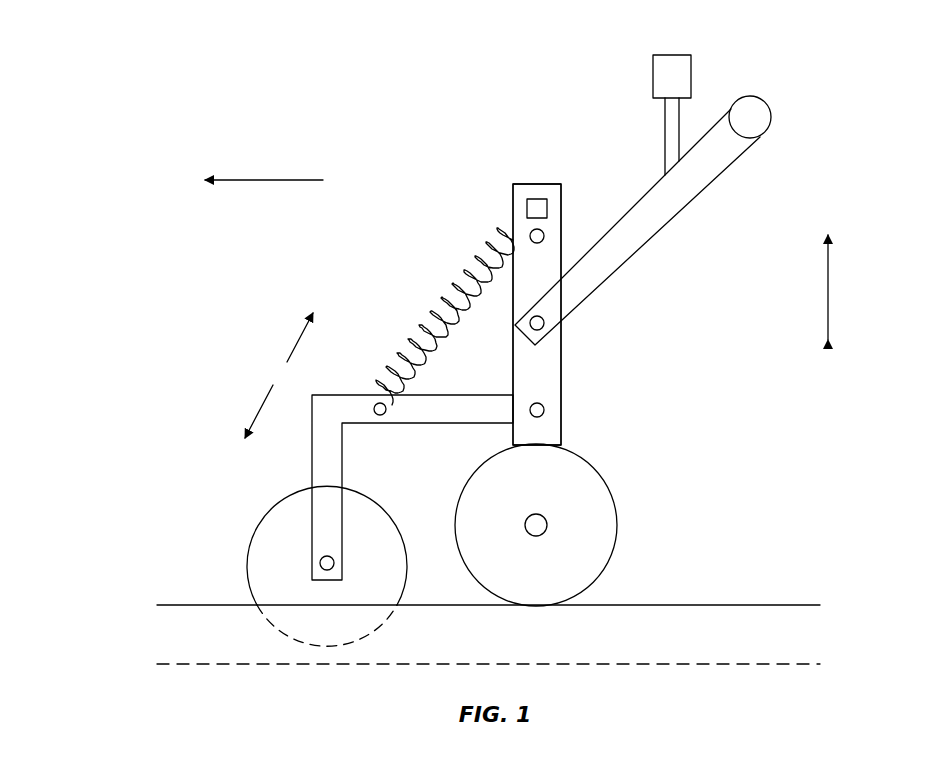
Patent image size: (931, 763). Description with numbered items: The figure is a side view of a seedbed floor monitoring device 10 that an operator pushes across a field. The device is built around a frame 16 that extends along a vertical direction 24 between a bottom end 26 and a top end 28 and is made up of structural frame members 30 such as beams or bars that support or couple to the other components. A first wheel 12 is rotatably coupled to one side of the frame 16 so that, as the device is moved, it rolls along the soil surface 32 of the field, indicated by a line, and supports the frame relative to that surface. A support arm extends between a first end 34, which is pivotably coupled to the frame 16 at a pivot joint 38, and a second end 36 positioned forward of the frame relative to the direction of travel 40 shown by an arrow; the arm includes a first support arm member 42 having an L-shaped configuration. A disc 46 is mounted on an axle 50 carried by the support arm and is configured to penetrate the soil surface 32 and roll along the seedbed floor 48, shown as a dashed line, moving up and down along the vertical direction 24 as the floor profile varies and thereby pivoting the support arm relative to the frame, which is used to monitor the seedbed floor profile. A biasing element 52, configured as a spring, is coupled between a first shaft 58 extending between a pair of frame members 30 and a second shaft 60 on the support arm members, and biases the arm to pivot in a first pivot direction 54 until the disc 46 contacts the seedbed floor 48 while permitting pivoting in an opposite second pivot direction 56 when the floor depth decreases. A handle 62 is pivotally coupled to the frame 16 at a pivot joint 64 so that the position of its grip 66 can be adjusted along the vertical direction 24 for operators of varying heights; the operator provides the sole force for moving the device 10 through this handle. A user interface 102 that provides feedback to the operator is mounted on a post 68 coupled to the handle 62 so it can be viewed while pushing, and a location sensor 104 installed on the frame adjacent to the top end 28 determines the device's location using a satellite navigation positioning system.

The seedbed floor monitoring device 10 is at (130, 160).
The first wheel 12 is at (618, 532).
The frame 16 is at (565, 365).
The vertical direction 24 is at (829, 298).
The bottom end 26 is at (597, 447).
The top end 28 is at (555, 153).
The structural frame members 30 is at (537, 183).
The soil surface 32 is at (765, 605).
The first end 34 is at (488, 435).
The second end 36 is at (292, 562).
The pivot joint 38 is at (545, 409).
The direction of travel 40 is at (275, 180).
The first support arm member 42 is at (348, 394).
The disc 46 is at (245, 575).
The seedbed floor 48 is at (705, 664).
The axle 50 is at (327, 572).
The biasing element 52 is at (450, 300).
The first pivot direction 54 is at (258, 410).
The second pivot direction 56 is at (300, 337).
The first shaft 58 is at (544, 236).
The second shaft 60 is at (378, 402).
The handle 62 is at (657, 230).
The pivot joint 64 is at (544, 323).
The grip 66 is at (765, 135).
The post 68 is at (665, 148).
The user interface 102 is at (653, 72).
The location sensor 104 is at (527, 208).